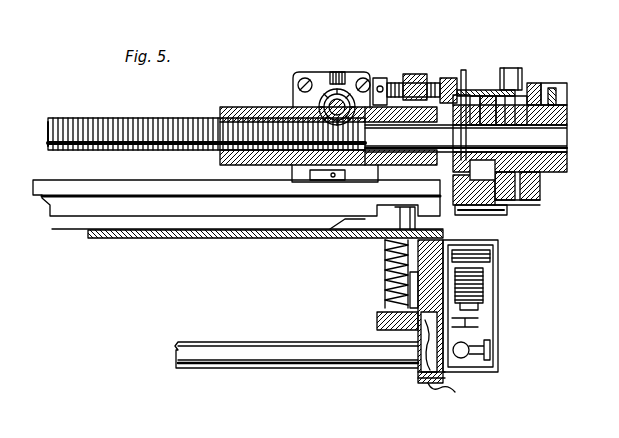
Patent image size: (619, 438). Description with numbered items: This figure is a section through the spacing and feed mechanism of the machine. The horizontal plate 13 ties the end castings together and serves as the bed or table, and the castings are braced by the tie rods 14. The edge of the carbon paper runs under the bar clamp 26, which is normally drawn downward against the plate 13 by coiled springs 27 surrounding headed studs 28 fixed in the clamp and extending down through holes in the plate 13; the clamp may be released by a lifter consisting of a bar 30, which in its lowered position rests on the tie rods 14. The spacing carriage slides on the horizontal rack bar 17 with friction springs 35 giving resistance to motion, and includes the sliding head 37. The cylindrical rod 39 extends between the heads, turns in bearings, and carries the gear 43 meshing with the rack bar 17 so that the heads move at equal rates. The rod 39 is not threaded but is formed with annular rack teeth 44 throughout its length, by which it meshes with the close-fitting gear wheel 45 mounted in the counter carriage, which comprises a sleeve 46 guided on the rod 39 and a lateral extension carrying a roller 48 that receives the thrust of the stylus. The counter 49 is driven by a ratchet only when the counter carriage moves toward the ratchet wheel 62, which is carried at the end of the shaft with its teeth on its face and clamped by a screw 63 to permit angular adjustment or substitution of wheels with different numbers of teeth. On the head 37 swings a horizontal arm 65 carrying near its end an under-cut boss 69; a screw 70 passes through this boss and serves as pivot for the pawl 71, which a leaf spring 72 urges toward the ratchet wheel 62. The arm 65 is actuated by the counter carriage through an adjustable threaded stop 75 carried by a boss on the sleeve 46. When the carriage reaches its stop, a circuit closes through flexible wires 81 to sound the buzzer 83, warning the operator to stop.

The cylindrical rod 39 is at (95, 118).
The annular rack teeth 44 is at (168, 118).
The sleeve 46 is at (236, 107).
The gear wheel 45 is at (333, 98).
The counter 49 is at (352, 72).
The adjustable threaded stop 75 is at (447, 78).
The horizontal arm 65 is at (463, 70).
The under-cut boss 69 is at (476, 90).
The gear 43 is at (503, 66).
The screw 70 is at (511, 68).
The pawl 71 is at (521, 88).
The ratchet wheel 62 is at (541, 98).
The screw 63 is at (556, 108).
The sliding head 37 is at (520, 202).
The horizontal rack bar 17 is at (498, 208).
The friction springs 35 is at (485, 216).
The horizontal plate 13 is at (218, 238).
The roller 48 is at (333, 182).
The bar clamp 26 is at (335, 229).
The coiled springs 27 is at (384, 268).
The headed studs 28 is at (392, 280).
The bar 30 is at (378, 318).
The tie rods 14 is at (270, 342).
The leaf spring 72 is at (415, 350).
The flexible wires 81 is at (445, 390).
The buzzer 83 is at (500, 318).